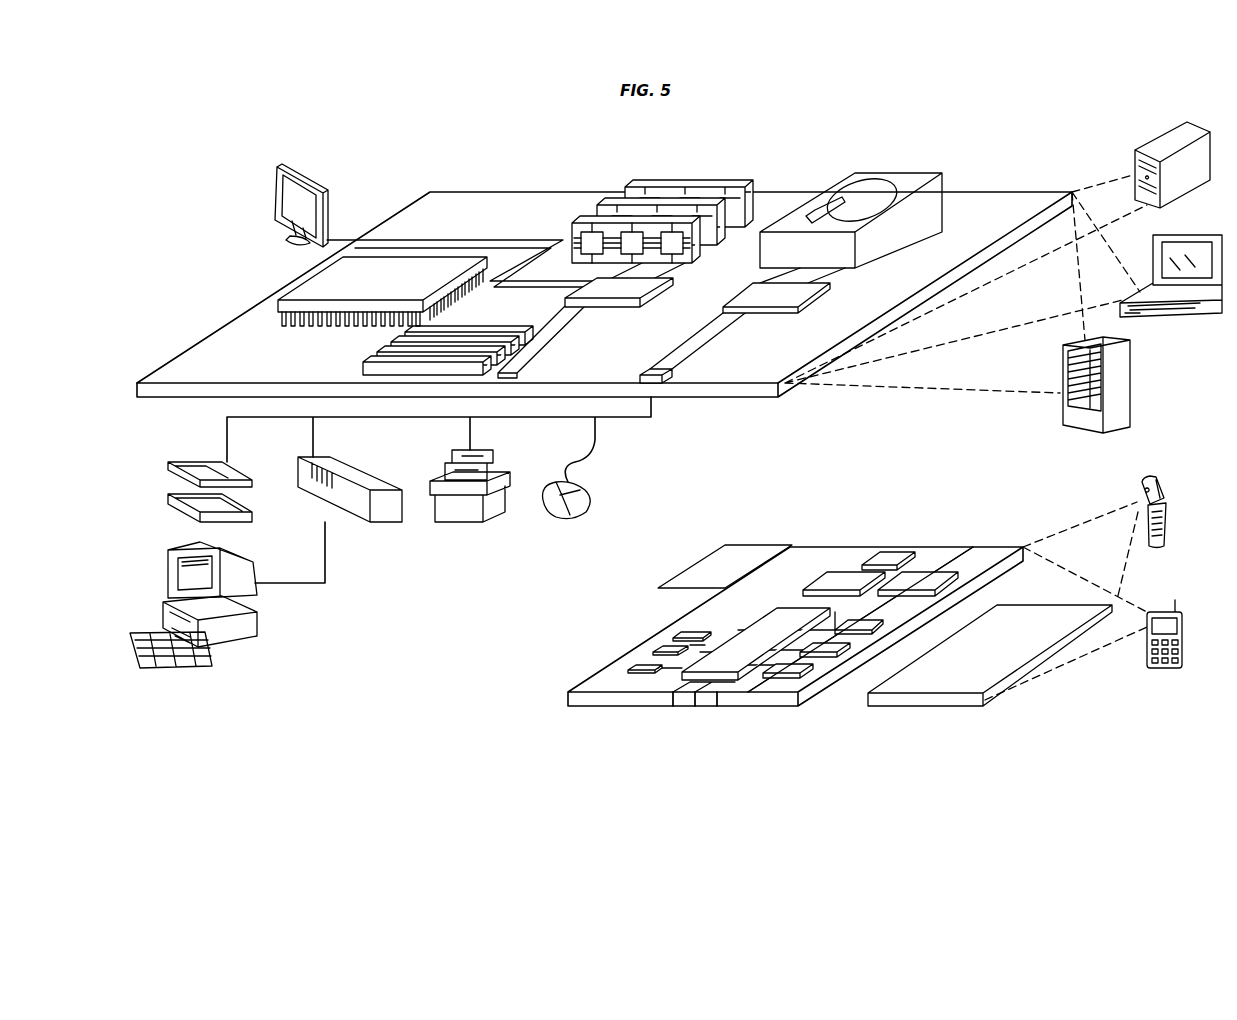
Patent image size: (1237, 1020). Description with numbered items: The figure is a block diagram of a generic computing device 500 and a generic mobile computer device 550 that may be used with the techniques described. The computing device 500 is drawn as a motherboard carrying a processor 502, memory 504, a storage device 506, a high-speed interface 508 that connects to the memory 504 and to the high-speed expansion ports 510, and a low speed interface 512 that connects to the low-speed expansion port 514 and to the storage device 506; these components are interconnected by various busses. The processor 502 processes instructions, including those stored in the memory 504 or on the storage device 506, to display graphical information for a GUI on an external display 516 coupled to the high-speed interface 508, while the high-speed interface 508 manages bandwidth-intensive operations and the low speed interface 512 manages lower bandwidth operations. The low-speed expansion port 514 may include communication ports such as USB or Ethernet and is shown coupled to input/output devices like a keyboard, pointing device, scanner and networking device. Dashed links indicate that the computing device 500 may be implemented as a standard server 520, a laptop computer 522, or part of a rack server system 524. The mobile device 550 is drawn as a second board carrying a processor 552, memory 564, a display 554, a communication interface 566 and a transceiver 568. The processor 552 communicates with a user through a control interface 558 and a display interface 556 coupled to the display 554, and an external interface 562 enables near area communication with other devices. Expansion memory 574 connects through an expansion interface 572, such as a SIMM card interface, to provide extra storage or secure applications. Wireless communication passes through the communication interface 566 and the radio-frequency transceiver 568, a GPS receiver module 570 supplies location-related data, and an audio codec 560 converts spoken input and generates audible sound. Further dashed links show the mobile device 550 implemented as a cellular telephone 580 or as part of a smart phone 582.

The computing device 500 is at (393, 146).
The processor 502 is at (298, 284).
The memory 504 is at (690, 190).
The storage device 506 is at (891, 172).
The high-speed interface 508 is at (630, 297).
The high-speed expansion ports 510 is at (383, 350).
The low speed interface 512 is at (755, 289).
The low-speed expansion port 514 is at (656, 370).
The display 516 is at (280, 166).
The standard server 520 is at (1153, 146).
The laptop computer 522 is at (1199, 232).
The rack server system 524 is at (1132, 387).
The mobile computer device 550 is at (528, 714).
The processor 552 is at (733, 650).
The display 554 is at (1024, 623).
The display interface 556 is at (815, 683).
The control interface 558 is at (840, 653).
The audio codec 560 is at (865, 618).
The external interface 562 is at (697, 702).
The memory 564 is at (655, 647).
The communication interface 566 is at (845, 577).
The transceiver 568 is at (923, 577).
The GPS receiver module 570 is at (888, 552).
The expansion interface 572 is at (780, 556).
The expansion memory 574 is at (707, 553).
The cellular telephone 580 is at (1151, 479).
The smart phone 582 is at (1158, 607).